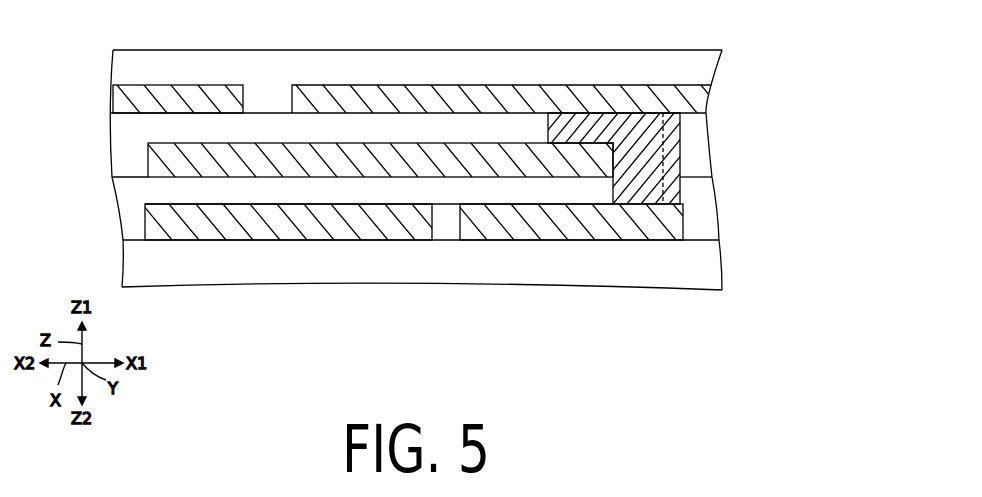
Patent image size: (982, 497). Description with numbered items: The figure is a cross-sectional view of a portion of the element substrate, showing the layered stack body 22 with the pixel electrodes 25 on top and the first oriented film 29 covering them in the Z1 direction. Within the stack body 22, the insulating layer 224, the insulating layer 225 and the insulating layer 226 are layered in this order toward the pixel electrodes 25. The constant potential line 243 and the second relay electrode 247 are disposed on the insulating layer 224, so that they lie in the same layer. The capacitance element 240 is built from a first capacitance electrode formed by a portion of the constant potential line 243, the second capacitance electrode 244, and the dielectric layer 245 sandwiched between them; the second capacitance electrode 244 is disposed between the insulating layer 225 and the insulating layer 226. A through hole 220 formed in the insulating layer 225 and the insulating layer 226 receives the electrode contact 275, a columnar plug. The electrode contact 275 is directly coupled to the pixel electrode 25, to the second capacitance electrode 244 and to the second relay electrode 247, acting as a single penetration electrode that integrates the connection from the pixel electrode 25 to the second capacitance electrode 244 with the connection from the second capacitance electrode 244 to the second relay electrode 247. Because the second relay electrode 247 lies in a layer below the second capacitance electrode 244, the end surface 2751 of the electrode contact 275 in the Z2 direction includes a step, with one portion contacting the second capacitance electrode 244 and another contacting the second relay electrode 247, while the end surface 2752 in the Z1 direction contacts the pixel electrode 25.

The stack body 22 is at (773, 132).
The pixel electrode 25 is at (192, 90).
The first oriented film 29 is at (695, 72).
The through hole 220 is at (622, 190).
The insulating layer 224 is at (697, 270).
The insulating layer 225 is at (697, 205).
The insulating layer 226 is at (697, 143).
The capacitance element 240 is at (56, 142).
The constant potential line 243 is at (177, 230).
The second capacitance electrode 244 is at (177, 154).
The dielectric layer 245 is at (176, 195).
The second relay electrode 247 is at (643, 228).
The electrode contact 275 is at (608, 169).
The end surface 2751 is at (663, 112).
The end surface 2752 is at (613, 118).